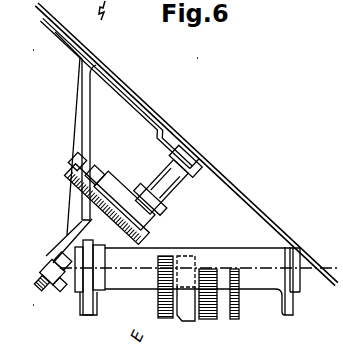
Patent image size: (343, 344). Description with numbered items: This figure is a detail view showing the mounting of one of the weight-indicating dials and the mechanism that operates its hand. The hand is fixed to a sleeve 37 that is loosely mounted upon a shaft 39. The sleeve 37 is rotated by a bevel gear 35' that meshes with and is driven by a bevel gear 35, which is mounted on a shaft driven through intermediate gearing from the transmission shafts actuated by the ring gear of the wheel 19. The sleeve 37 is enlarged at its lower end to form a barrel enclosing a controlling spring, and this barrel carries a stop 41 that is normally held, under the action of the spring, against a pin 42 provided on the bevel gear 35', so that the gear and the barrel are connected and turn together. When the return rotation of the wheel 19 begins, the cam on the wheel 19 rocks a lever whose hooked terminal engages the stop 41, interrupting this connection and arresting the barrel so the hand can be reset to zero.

The wheel 19 is at (184, 149).
The bevel gear 35 is at (199, 280).
The bevel gear 35' is at (54, 219).
The sleeve 37 is at (168, 196).
The shaft 39 is at (208, 122).
The stop 41 is at (110, 182).
The pin 42 is at (112, 166).